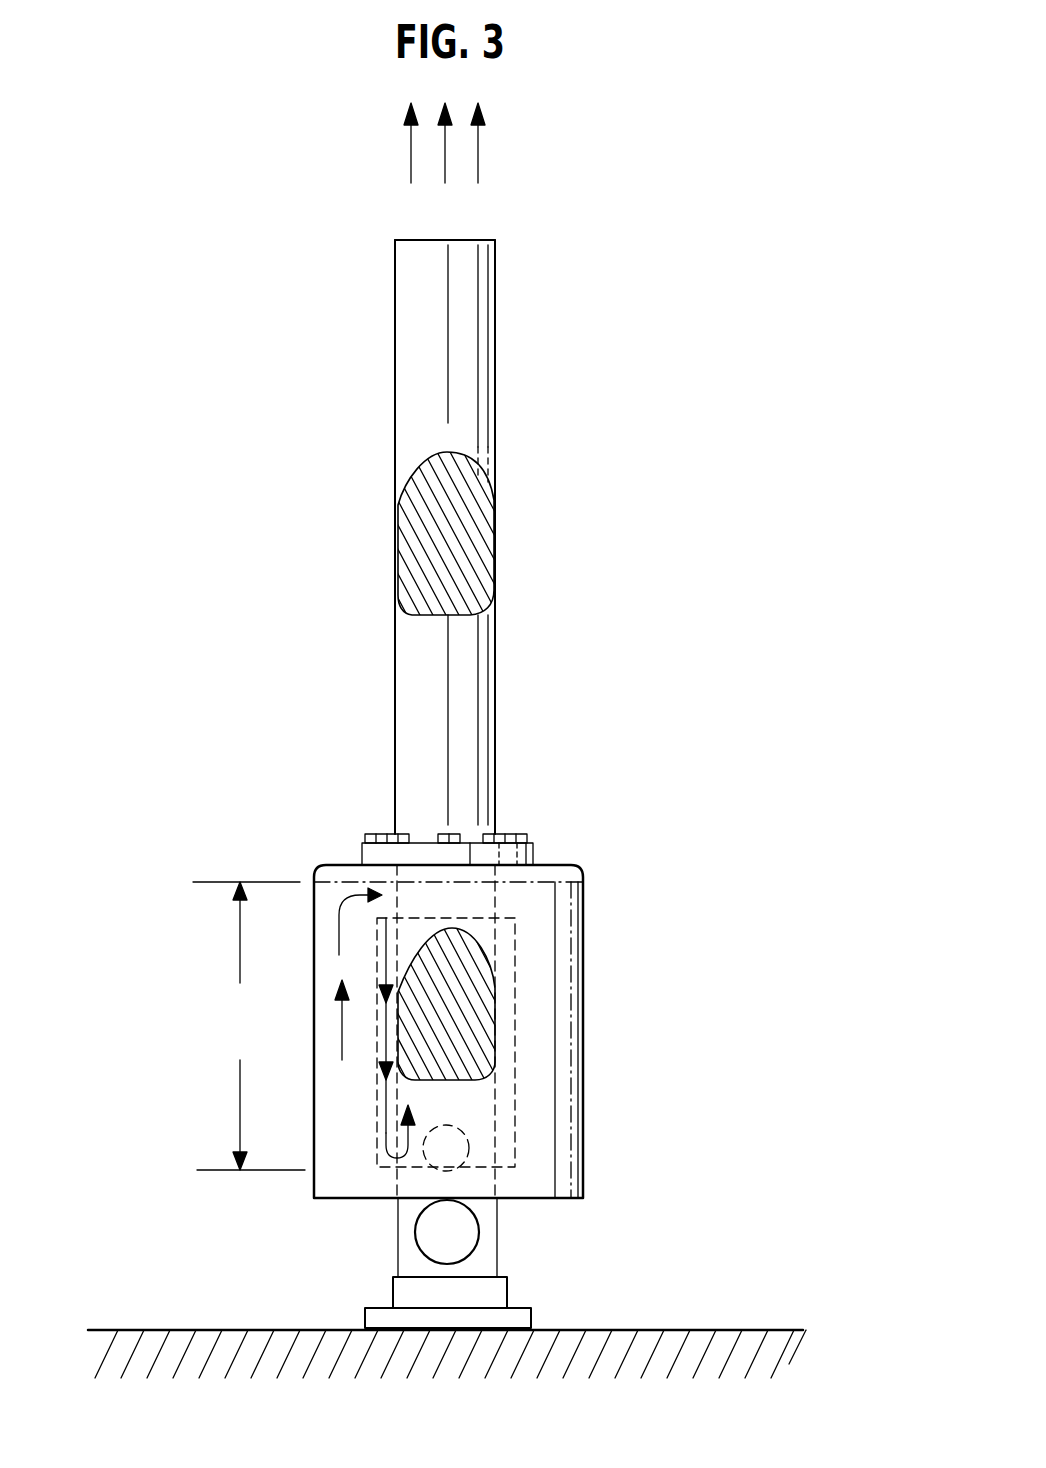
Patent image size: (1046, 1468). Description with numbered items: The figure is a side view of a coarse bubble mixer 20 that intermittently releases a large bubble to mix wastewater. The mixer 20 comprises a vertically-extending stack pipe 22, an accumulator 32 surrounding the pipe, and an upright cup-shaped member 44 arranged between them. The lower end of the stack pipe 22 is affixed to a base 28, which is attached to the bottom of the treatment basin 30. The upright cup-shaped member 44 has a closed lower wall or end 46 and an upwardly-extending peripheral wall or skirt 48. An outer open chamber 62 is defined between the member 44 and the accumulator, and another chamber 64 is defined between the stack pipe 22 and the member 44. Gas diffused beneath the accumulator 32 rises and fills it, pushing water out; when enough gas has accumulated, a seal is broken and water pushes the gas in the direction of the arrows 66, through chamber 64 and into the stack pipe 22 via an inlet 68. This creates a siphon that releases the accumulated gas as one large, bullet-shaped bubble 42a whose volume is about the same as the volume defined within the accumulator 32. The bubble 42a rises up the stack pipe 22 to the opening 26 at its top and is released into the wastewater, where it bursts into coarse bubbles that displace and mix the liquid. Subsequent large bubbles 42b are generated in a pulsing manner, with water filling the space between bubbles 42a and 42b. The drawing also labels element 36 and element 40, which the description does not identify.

The coarse bubble mixer 20 is at (238, 488).
The stack pipe 22 is at (495, 333).
The opening 26 is at (473, 240).
The base 28 is at (507, 1297).
The treatment basin 30 is at (688, 1330).
The accumulator 32 is at (483, 1058).
The housing 36 is at (337, 1198).
The flange 40 is at (547, 865).
The large bubble 42a is at (473, 518).
The subsequent large bubble 42b is at (470, 983).
The upright cup-shaped member 44 is at (473, 680).
The closed lower wall 46 is at (503, 1167).
The peripheral wall 48 is at (515, 1020).
The outer open chamber 62 is at (560, 990).
The chamber 64 is at (503, 1058).
The arrows 66 is at (340, 943).
The inlet 68 is at (480, 1138).